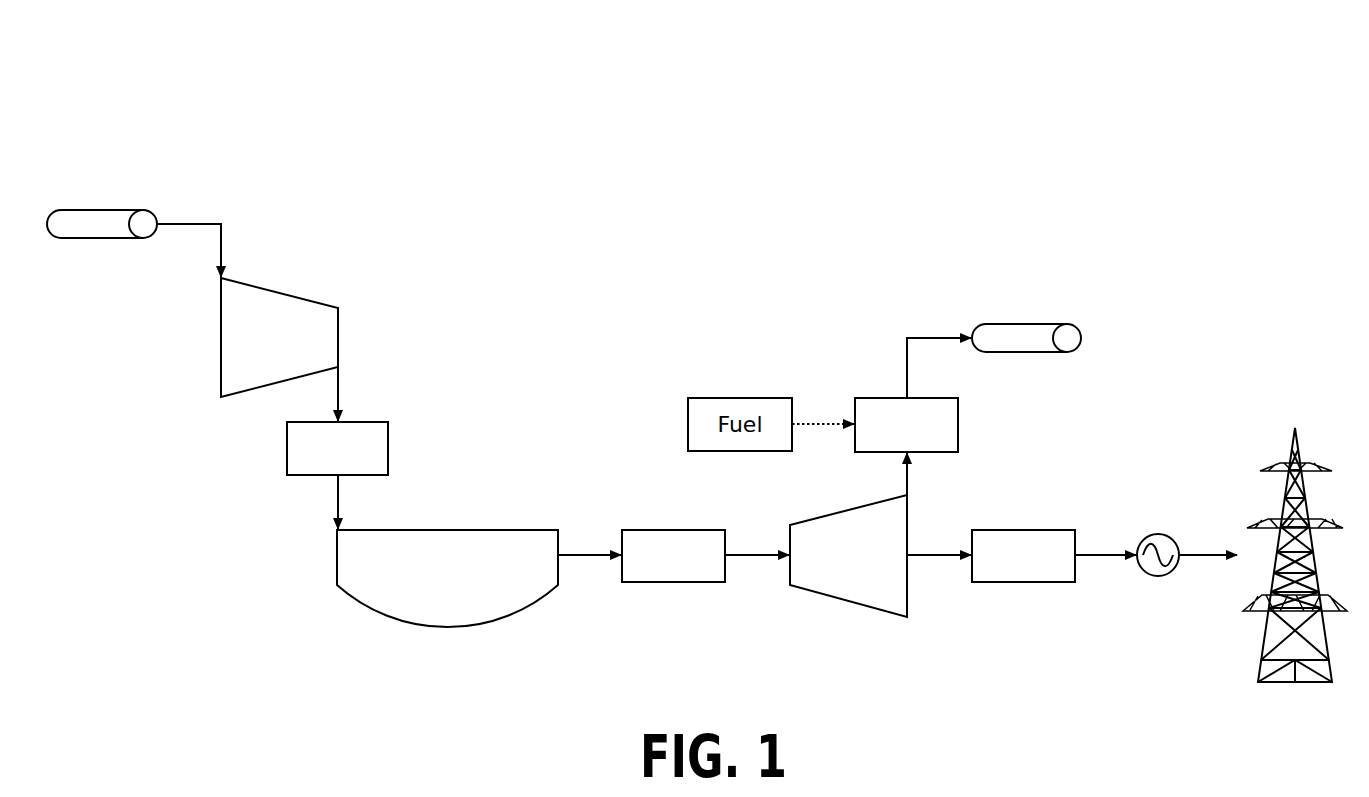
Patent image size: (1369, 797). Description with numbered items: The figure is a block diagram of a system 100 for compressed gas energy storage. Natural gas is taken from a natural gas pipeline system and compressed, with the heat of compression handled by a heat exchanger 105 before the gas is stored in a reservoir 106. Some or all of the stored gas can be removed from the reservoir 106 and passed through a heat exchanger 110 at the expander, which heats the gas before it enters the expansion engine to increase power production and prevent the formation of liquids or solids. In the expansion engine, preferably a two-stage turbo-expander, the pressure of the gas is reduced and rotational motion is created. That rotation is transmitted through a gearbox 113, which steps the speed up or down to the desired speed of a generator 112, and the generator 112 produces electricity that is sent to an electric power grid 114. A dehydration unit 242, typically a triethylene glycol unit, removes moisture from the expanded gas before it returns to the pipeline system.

The system 100 is at (172, 84).
The heat exchanger 105 is at (319, 461).
The reservoir 106 is at (428, 569).
The heat exchanger at the expander 110 is at (654, 569).
The generator 112 is at (1172, 541).
The gearbox 113 is at (1004, 569).
The electric power grid 114 is at (1310, 468).
The dehydration unit 242 is at (888, 436).